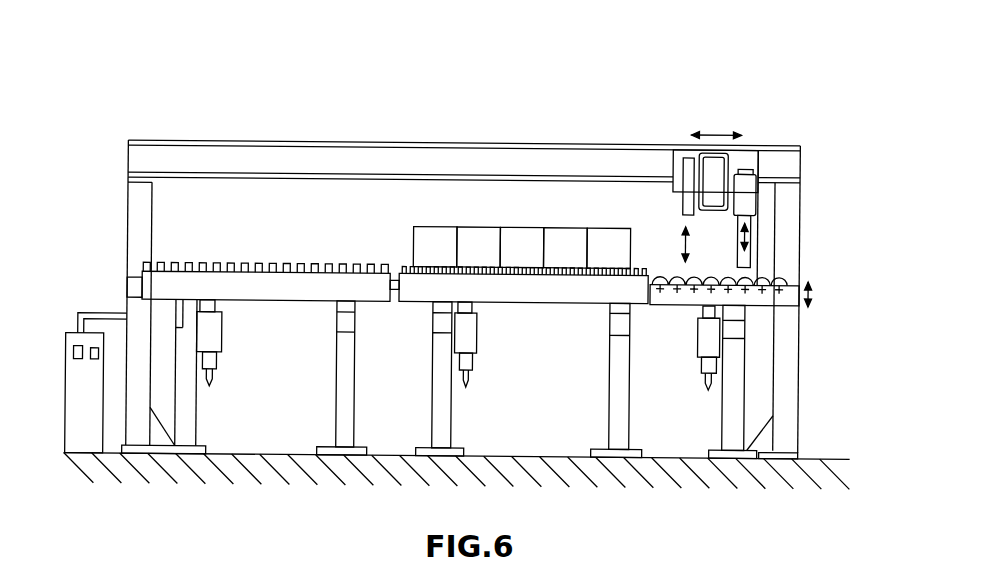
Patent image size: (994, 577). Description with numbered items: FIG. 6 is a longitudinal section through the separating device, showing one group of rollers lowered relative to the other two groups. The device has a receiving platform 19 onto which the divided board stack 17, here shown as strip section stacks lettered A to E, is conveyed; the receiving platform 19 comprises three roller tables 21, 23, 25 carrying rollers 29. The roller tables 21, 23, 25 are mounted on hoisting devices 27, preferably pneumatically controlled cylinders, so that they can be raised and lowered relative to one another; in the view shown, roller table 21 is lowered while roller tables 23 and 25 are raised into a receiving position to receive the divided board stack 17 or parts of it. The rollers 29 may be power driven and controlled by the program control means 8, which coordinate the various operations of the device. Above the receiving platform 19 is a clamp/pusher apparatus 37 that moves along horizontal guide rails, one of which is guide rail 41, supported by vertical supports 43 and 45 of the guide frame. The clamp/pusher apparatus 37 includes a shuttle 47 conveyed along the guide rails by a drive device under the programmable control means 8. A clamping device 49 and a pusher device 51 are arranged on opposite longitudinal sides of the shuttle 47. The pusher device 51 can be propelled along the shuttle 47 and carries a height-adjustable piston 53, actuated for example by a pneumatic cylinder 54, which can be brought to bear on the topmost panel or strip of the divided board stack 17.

The program control means 8 is at (80, 411).
The divided board stack 17 is at (600, 226).
The receiving platform 19 is at (320, 260).
The roller table 21 is at (762, 311).
The roller table 23 is at (530, 313).
The roller table 25 is at (133, 296).
The hoisting devices 27 is at (700, 340).
The rollers 29 is at (755, 272).
The clamp/pusher apparatus 37 is at (679, 141).
The guide rail 41 is at (485, 161).
The vertical support 43 is at (788, 207).
The vertical support 45 is at (138, 222).
The shuttle 47 is at (750, 141).
The clamping device 49 is at (668, 204).
The pusher device 51 is at (748, 188).
The piston 53 is at (750, 255).
The pneumatic cylinder 54 is at (758, 205).